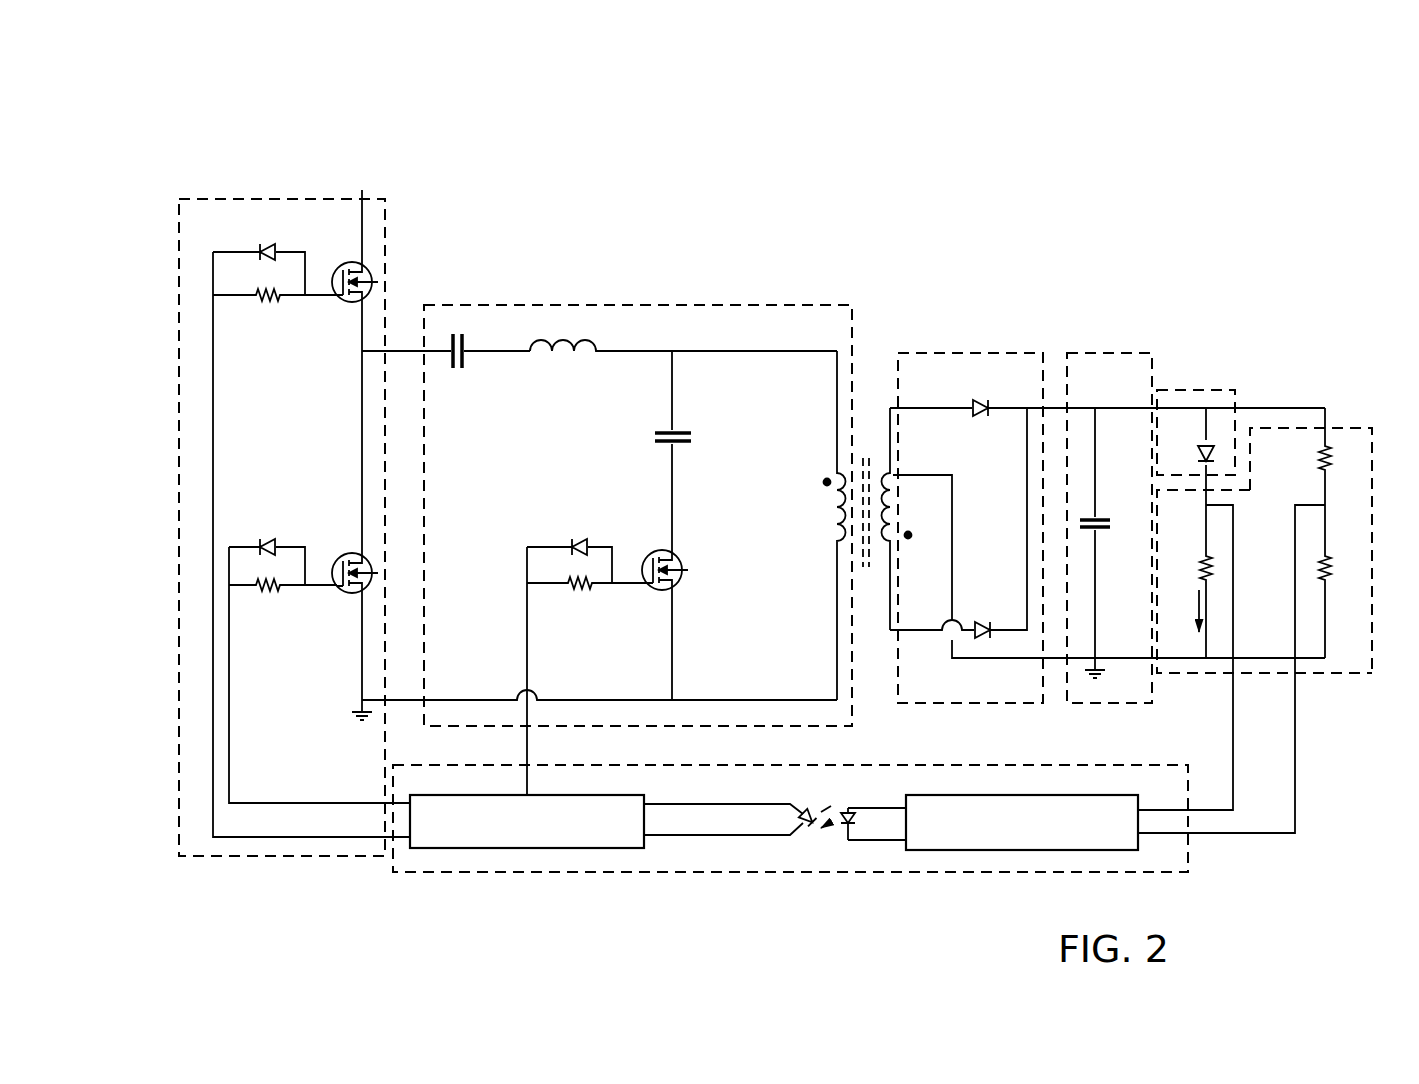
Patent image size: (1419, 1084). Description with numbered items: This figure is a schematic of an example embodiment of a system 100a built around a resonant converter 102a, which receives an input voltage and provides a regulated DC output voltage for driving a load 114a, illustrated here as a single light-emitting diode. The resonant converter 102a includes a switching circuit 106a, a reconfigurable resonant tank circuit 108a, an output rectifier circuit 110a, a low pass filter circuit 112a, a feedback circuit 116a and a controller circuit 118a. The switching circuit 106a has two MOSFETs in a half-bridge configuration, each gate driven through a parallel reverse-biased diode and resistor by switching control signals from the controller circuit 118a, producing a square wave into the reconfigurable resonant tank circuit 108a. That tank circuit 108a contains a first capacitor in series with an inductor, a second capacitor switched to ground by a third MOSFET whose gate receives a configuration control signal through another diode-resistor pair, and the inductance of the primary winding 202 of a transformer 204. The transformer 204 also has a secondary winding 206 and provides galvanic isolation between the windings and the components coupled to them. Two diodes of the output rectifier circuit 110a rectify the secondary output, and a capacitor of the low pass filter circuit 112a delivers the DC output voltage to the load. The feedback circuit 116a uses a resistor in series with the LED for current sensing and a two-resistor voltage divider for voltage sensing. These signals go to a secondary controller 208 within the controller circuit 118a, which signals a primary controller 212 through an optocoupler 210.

The system 100a is at (385, 108).
The resonant converter 102a is at (640, 258).
The switching circuit 106a is at (282, 198).
The reconfigurable resonant tank circuit 108a is at (545, 306).
The output rectifier circuit 110a is at (975, 350).
The low pass filter circuit 112a is at (1103, 350).
The load 114a is at (1196, 388).
The feedback circuit 116a is at (1348, 426).
The controller circuit 118a is at (410, 874).
The primary winding 202 is at (832, 540).
The transformer 204 is at (866, 582).
The secondary winding 206 is at (897, 471).
The secondary controller 208 is at (1022, 822).
The optocoupler 210 is at (822, 850).
The primary controller 212 is at (527, 821).